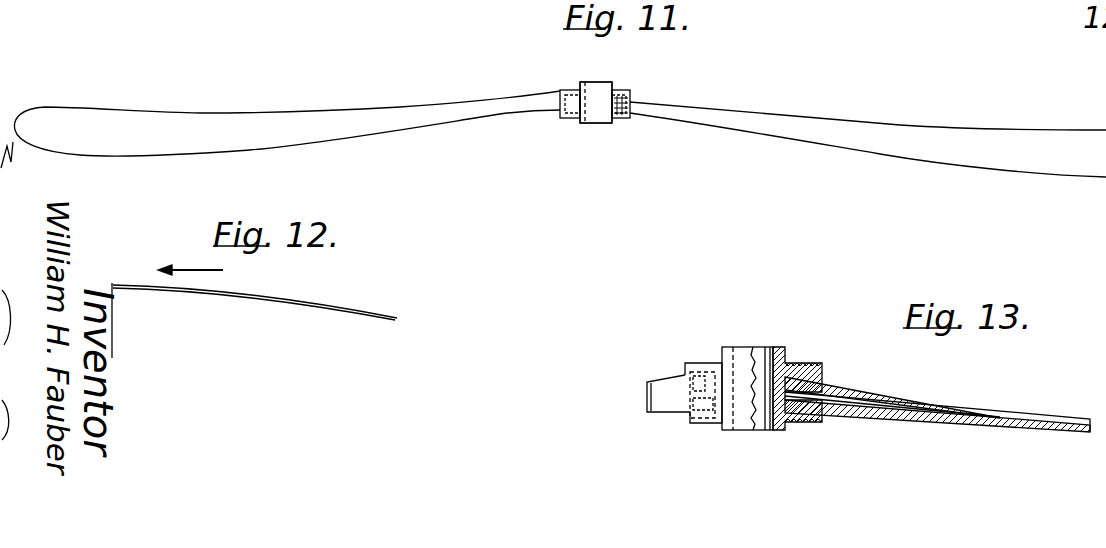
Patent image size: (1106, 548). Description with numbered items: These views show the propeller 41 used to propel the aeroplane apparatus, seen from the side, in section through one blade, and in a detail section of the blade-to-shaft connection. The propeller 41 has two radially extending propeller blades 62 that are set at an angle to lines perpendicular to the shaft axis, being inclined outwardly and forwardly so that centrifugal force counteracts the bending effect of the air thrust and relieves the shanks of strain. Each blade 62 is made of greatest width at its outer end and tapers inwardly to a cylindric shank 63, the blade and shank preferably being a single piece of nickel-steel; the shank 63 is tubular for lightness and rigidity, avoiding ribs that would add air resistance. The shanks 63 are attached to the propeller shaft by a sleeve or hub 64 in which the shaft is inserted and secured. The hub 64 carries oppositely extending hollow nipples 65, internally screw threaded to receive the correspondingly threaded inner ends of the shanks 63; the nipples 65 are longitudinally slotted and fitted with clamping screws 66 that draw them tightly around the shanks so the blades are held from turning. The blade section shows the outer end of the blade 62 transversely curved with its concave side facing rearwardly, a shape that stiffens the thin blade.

In FIG. 11, the propeller 41 is at (572, 82).
In FIG. 11, the propeller blades 62 is at (128, 125).
In FIG. 12, the propeller blades 62 is at (313, 298).
In FIG. 13, the propeller blades 62 is at (1077, 424).
In FIG. 11, the cylindric shank 63 is at (538, 112).
In FIG. 13, the cylindric shank 63 is at (663, 405).
In FIG. 11, the sleeve or hub 64 is at (597, 123).
In FIG. 13, the sleeve or hub 64 is at (745, 426).
In FIG. 11, the hollow nipples 65 is at (570, 113).
In FIG. 13, the hollow nipples 65 is at (702, 366).
In FIG. 11, the clamping screws 66 is at (622, 101).